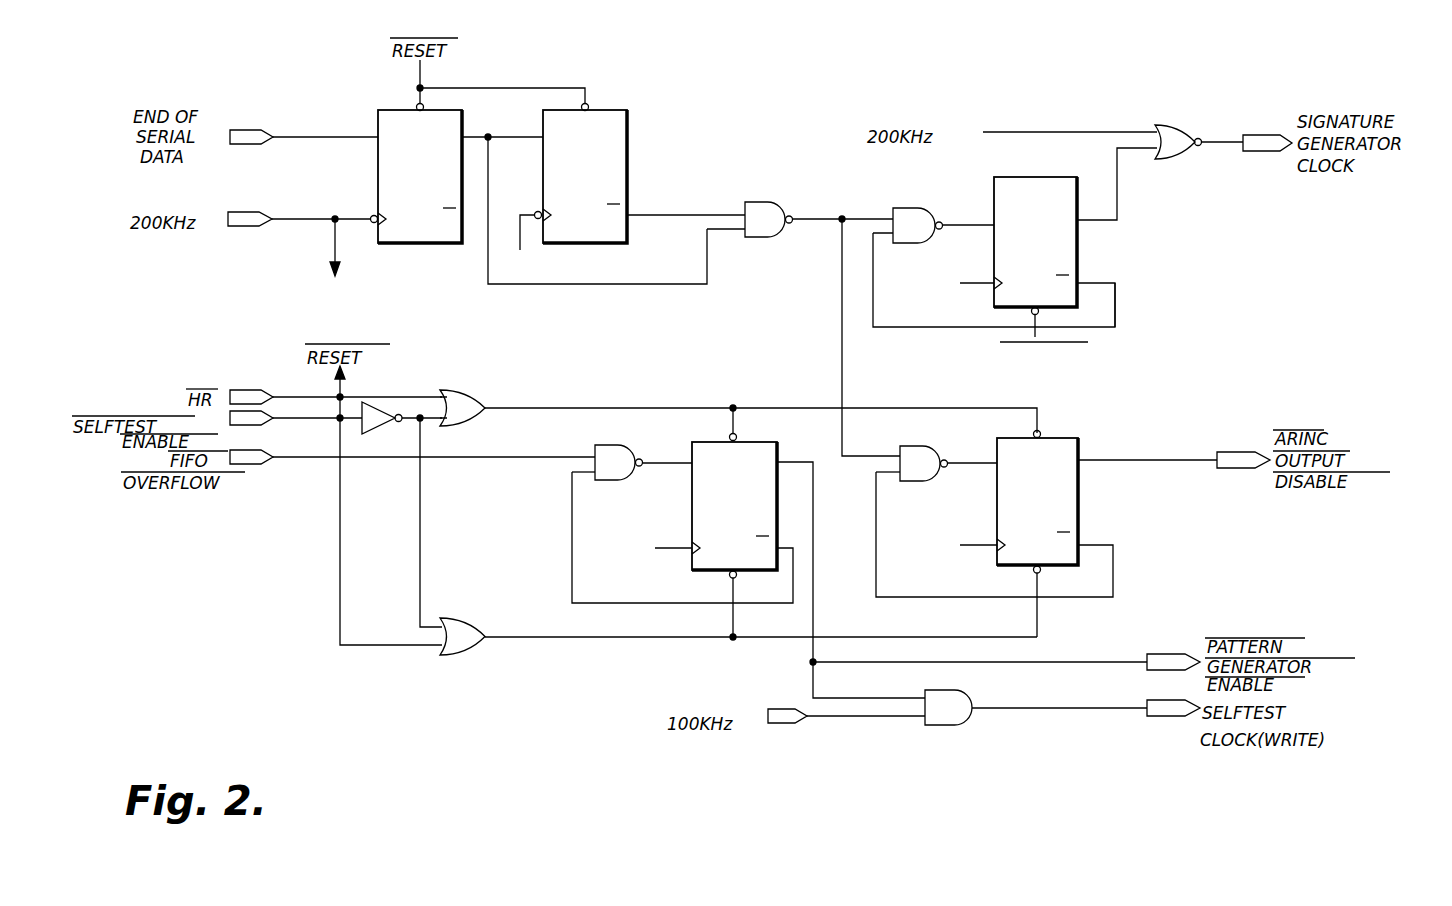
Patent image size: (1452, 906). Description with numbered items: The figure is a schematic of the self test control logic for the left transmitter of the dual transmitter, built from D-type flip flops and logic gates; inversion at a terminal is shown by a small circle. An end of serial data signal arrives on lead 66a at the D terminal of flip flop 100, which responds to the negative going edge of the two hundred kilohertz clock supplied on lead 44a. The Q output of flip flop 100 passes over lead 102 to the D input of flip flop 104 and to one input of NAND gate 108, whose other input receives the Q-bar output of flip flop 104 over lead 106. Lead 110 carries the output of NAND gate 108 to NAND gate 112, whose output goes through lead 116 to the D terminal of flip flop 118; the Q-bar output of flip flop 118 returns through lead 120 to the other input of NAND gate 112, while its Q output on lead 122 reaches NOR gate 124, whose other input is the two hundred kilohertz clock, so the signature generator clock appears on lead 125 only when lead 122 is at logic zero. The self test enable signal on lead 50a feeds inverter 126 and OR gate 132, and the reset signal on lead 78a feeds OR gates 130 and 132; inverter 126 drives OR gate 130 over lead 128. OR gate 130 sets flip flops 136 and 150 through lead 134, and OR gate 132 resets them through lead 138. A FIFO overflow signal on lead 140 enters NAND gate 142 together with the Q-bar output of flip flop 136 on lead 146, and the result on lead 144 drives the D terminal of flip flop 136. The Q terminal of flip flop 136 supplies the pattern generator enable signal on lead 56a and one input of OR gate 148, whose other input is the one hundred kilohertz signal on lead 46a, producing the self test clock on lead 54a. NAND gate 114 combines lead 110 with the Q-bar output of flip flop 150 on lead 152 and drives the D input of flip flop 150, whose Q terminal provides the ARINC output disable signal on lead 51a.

The lead 66a is at (320, 137).
The lead 44a is at (305, 216).
The flip flop 100 is at (415, 243).
The lead 102 is at (514, 136).
The flip flop 104 is at (627, 160).
The lead 106 is at (663, 215).
The NAND gate 108 is at (775, 201).
The lead 110 is at (813, 225).
The NAND gate 112 is at (917, 208).
The NAND gate 114 is at (925, 446).
The lead 116 is at (962, 226).
The flip flop 118 is at (1079, 253).
The lead 120 is at (1115, 311).
The lead 122 is at (1119, 203).
The NOR gate 124 is at (1178, 124).
The lead 125 is at (1225, 144).
The inverter 126 is at (366, 434).
The lead 128 is at (432, 421).
The OR gate 130 is at (475, 390).
The OR gate 132 is at (465, 619).
The lead 134 is at (705, 407).
The flip flop 136 is at (692, 517).
The lead 138 is at (570, 637).
The lead 140 is at (440, 458).
The NAND gate 142 is at (632, 427).
The lead 144 is at (680, 463).
The lead 146 is at (625, 603).
The OR gate 148 is at (935, 726).
The flip flop 150 is at (997, 505).
The lead 152 is at (965, 597).
The lead 78a is at (295, 393).
The lead 50a is at (310, 418).
The lead 51a is at (1112, 460).
The lead 56a is at (1085, 662).
The lead 46a is at (845, 716).
The lead 54a is at (1050, 708).